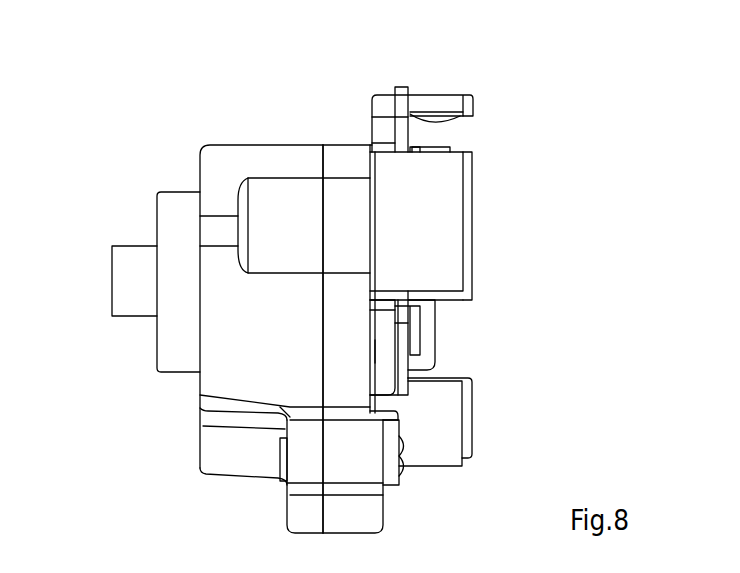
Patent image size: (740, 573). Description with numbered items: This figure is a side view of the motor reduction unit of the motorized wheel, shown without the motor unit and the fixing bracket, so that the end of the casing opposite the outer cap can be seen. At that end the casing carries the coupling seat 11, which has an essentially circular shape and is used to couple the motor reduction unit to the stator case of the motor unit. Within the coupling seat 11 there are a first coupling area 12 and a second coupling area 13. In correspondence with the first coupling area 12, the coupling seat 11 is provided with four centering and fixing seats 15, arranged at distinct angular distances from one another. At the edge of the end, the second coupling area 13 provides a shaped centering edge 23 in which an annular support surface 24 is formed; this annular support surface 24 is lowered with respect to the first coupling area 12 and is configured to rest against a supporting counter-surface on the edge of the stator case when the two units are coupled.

The coupling seat 11 is at (180, 102).
The first coupling area 12 is at (432, 50).
The second coupling area 13 is at (524, 260).
The centering and fixing seats 15 is at (413, 70).
The shaped centering edge 23 is at (471, 192).
The annular support surface 24 is at (459, 230).